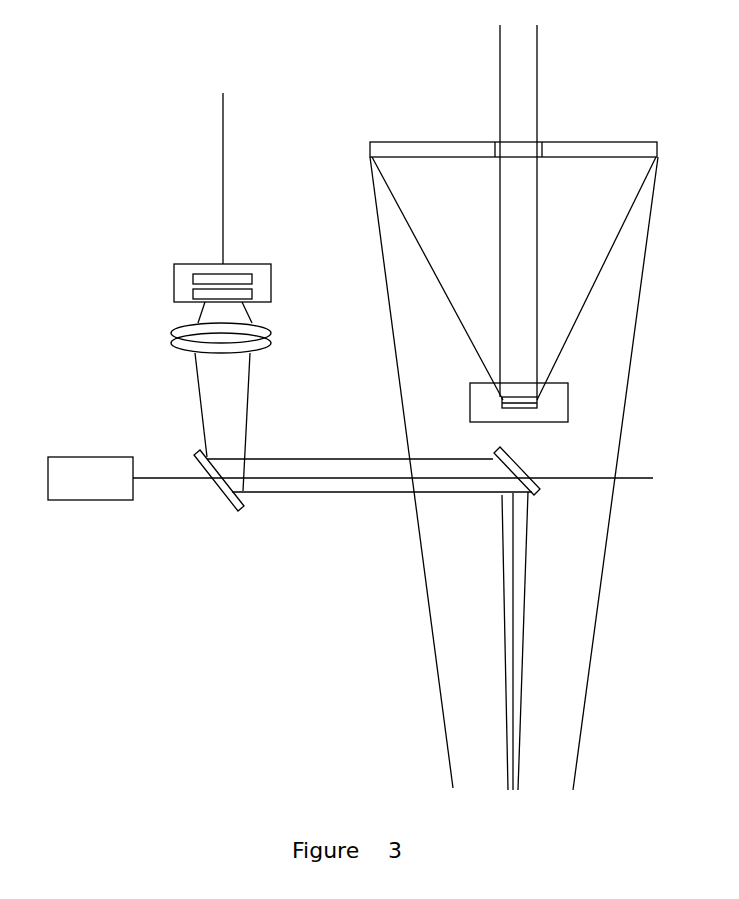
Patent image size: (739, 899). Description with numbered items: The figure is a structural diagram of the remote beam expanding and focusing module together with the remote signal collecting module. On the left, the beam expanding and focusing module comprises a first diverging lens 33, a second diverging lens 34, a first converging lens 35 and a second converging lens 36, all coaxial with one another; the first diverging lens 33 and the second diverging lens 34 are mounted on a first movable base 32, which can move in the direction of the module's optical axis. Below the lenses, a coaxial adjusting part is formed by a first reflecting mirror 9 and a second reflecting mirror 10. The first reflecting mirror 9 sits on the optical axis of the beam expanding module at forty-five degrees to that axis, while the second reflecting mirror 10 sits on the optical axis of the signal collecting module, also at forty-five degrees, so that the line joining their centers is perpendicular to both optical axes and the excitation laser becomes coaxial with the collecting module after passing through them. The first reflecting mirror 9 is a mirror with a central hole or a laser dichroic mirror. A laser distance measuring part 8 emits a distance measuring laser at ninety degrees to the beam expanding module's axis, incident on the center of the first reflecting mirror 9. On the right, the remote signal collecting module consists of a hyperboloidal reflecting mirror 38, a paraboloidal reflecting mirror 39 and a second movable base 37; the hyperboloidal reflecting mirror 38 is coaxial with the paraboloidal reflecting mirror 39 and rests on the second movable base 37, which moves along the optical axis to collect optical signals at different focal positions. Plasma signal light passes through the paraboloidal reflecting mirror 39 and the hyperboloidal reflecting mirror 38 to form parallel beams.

The laser distance measuring part 8 is at (90, 478).
The first reflecting mirror 9 is at (222, 493).
The second reflecting mirror 10 is at (589, 471).
The first movable base 32 is at (197, 267).
The first diverging lens 33 is at (188, 277).
The second diverging lens 34 is at (180, 293).
The first converging lens 35 is at (190, 328).
The second converging lens 36 is at (177, 343).
The second movable base 37 is at (568, 405).
The hyperboloidal reflecting mirror 38 is at (537, 403).
The paraboloidal reflecting mirror 39 is at (632, 140).